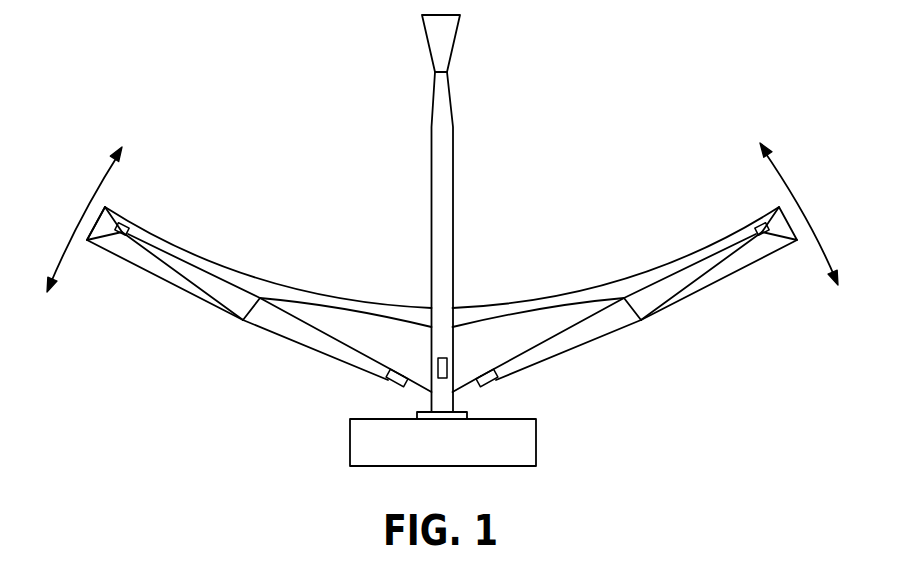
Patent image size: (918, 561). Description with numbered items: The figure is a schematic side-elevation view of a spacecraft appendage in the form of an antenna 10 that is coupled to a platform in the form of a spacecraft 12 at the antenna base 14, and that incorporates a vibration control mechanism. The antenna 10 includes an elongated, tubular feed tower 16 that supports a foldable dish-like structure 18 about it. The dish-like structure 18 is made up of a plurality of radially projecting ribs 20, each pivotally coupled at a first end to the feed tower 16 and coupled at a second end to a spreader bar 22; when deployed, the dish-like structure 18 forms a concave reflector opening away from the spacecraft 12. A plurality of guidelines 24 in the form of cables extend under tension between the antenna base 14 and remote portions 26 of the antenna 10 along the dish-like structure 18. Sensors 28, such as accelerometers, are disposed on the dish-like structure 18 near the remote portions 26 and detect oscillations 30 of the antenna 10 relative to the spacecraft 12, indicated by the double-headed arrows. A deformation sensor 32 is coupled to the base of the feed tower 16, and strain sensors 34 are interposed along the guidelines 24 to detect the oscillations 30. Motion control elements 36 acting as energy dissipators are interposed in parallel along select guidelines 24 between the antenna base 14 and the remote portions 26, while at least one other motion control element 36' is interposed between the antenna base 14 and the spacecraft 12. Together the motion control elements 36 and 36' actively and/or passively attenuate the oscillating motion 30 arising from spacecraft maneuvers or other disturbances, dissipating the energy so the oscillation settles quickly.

The antenna 10 is at (603, 106).
The spacecraft 12 is at (534, 452).
The antenna base 14 is at (452, 405).
The feed tower 16 is at (442, 198).
The dish-like structure 18 is at (547, 300).
The ribs 20 is at (331, 306).
The spreader bar 22 is at (110, 220).
The guidelines 24 is at (178, 290).
The remote portions 26 is at (794, 240).
The sensors 28 is at (131, 228).
The oscillations 30 is at (84, 210).
The deformation sensor 32 is at (440, 358).
The strain sensors 34 is at (388, 375).
The motion control elements 36 is at (442, 365).
The motion control element 36' is at (366, 414).